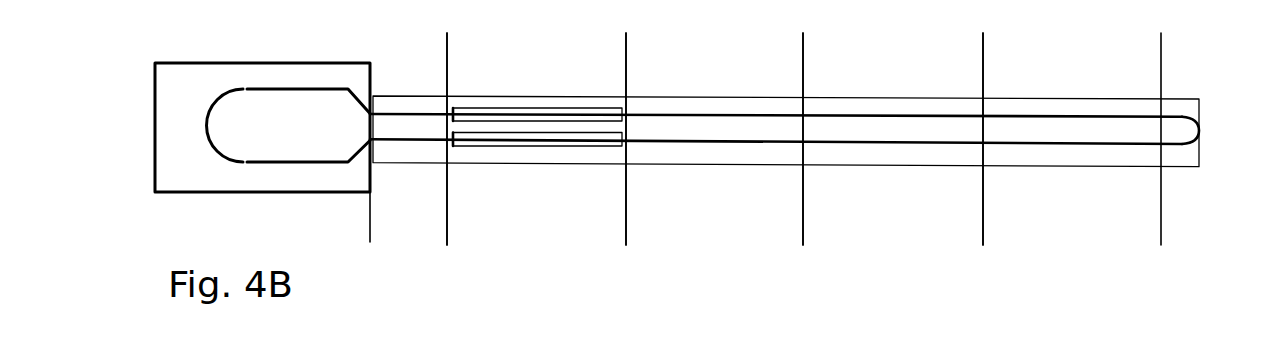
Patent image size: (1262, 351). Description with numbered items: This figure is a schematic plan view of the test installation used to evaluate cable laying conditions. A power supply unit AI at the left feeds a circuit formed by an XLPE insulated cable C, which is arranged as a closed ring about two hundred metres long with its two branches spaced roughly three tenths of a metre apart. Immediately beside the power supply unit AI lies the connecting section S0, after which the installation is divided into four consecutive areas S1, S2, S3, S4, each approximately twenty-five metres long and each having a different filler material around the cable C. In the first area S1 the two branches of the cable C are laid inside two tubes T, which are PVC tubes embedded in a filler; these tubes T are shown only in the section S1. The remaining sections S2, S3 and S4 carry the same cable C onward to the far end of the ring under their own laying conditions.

The power supply unit AI is at (193, 62).
The connecting section S0 is at (388, 87).
The first area S1 is at (497, 88).
The second section S2 is at (681, 88).
The third section S3 is at (863, 89).
The fourth section S4 is at (1043, 95).
The tube T is at (497, 125).
The cable C is at (1181, 118).